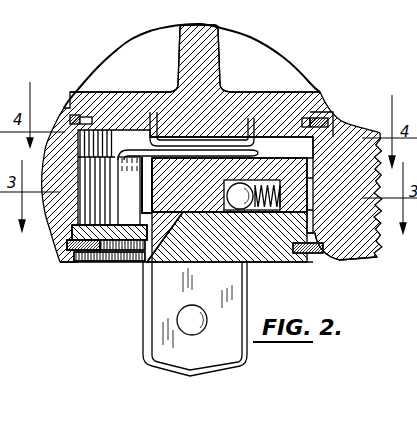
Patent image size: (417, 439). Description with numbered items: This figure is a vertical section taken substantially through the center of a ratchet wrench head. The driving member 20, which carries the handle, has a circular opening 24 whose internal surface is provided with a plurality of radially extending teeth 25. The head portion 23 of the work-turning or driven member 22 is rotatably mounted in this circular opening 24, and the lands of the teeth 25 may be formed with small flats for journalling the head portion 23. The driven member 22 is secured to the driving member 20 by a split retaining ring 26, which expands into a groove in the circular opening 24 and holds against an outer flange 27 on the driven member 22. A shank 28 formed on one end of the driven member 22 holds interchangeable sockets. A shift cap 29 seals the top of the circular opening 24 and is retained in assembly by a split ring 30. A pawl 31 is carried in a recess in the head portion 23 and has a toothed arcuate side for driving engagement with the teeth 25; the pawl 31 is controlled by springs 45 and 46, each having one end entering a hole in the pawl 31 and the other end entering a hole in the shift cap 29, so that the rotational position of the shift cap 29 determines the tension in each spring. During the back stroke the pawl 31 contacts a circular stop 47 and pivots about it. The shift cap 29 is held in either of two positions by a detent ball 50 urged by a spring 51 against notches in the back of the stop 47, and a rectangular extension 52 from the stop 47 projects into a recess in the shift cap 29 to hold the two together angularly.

The driving member 20 is at (340, 118).
The work-turning or driven member 22 is at (207, 243).
The head portion 23 is at (305, 178).
The circular opening 24 is at (315, 149).
The teeth 25 is at (308, 210).
The split retaining ring 26 is at (83, 252).
The outer flange 27 is at (337, 255).
The shank 28 is at (157, 325).
The shift cap 29 is at (162, 103).
The split ring 30 is at (73, 116).
The pawl 31 is at (135, 203).
The spring 45 is at (177, 150).
The spring 46 is at (217, 157).
The circular stop 47 is at (139, 262).
The detent ball 50 is at (242, 210).
The spring 51 is at (277, 213).
The rectangular extension 52 is at (202, 115).